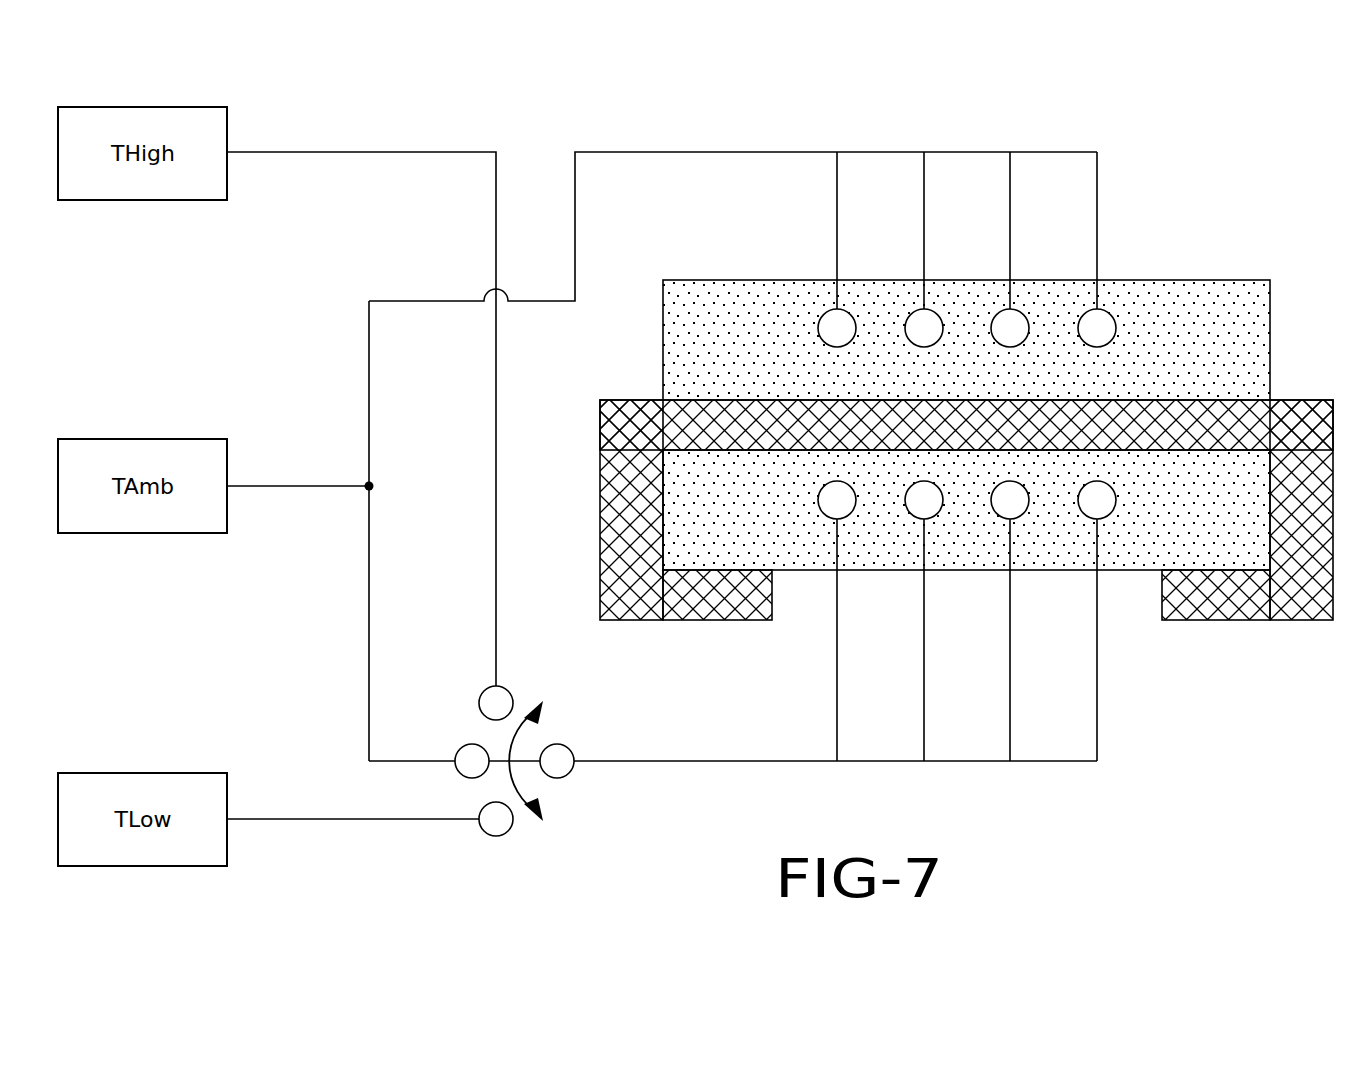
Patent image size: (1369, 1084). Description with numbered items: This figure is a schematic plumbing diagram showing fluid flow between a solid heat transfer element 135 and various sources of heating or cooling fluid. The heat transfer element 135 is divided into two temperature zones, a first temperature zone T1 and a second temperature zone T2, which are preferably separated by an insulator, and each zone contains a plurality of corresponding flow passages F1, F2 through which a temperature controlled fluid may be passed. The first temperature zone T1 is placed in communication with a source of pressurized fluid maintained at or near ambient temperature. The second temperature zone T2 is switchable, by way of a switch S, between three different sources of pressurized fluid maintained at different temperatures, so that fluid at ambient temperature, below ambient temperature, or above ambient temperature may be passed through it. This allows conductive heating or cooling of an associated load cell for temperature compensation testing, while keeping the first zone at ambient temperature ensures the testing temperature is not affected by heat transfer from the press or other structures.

The heat transfer element 135 is at (966, 427).
The first temperature zone T1 is at (718, 328).
The second temperature zone T2 is at (1167, 527).
The flow passages F1 is at (817, 323).
The flow passages F2 is at (817, 504).
The switch S is at (520, 761).